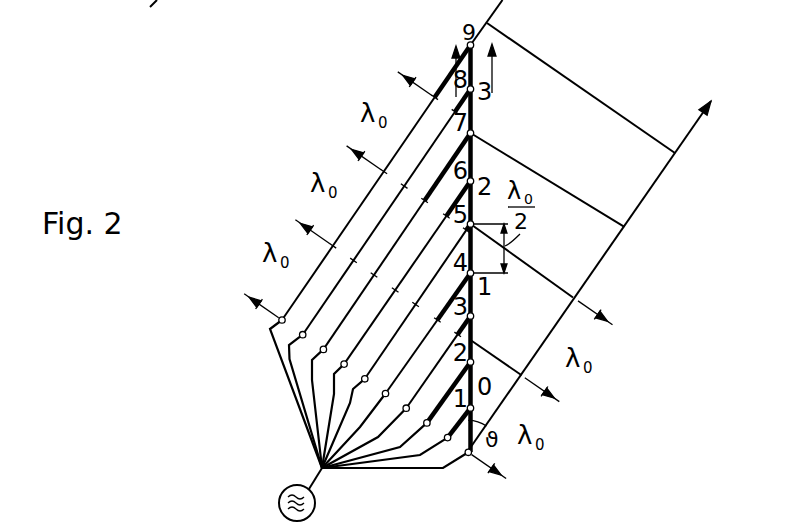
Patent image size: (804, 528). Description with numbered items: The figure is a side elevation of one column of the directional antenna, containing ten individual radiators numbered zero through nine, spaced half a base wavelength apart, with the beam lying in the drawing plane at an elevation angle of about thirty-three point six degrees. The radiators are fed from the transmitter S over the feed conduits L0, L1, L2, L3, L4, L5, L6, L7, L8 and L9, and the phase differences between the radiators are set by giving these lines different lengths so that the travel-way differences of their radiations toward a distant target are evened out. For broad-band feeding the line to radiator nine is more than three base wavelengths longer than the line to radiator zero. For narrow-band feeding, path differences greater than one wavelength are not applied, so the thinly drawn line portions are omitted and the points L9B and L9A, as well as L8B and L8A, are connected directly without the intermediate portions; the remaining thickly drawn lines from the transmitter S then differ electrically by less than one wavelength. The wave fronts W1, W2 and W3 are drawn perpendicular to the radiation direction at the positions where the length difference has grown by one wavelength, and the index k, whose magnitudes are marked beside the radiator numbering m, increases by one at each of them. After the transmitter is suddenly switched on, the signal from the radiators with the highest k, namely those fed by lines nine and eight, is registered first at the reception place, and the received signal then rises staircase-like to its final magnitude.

The transmitter S is at (308, 494).
The feed line L0 is at (468, 457).
The feed line L1 is at (438, 450).
The feed line L2 is at (401, 450).
The feed line L3 is at (378, 440).
The feed line L4 is at (376, 407).
The feed line L5 is at (353, 392).
The feed line L6 is at (334, 377).
The feed line L7 is at (312, 363).
The feed line L8 is at (289, 348).
The point on feed line L8 L8A is at (458, 112).
The point on feed line L8 L8B is at (303, 332).
The feed line L9 is at (278, 321).
The point on feed line L9 L9A is at (433, 94).
The point on feed line L9 L9B is at (278, 319).
The wavefront 1 W1 is at (497, 358).
The wavefront 2 W2 is at (547, 278).
The wavefront 3 W3 is at (560, 188).
The element index axis m is at (451, 58).
The element k is at (499, 68).